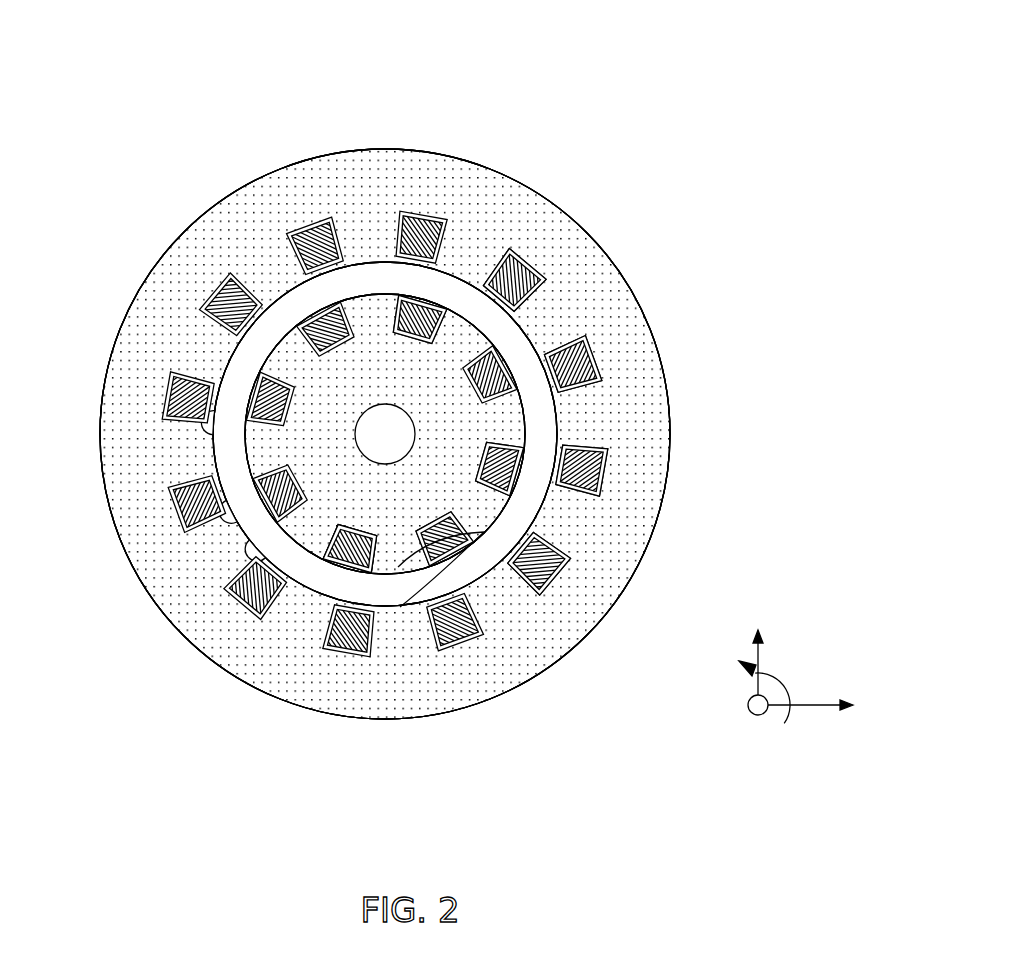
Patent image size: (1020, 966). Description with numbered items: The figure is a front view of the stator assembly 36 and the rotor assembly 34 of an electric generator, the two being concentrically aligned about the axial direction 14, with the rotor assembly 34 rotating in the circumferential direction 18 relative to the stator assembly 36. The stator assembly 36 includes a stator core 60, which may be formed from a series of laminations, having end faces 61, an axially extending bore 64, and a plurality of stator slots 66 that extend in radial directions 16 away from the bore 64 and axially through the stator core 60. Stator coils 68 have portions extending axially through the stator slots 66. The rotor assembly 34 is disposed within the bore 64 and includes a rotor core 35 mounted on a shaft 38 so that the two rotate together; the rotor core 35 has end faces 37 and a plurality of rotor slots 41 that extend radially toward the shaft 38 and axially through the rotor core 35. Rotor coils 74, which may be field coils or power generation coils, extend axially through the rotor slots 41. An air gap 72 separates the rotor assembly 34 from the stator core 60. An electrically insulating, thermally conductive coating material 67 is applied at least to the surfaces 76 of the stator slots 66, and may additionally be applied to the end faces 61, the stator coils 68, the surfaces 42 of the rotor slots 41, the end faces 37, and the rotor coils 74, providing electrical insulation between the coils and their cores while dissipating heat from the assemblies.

The axial direction 14 is at (758, 718).
The radial direction 16 is at (762, 632).
The circumferential direction 18 is at (783, 672).
The rotor assembly 34 is at (380, 308).
The rotor core 35 is at (377, 238).
The stator assembly 36 is at (152, 150).
The end faces 37 is at (327, 507).
The shaft 38 is at (385, 466).
The rotor slots 41 is at (483, 480).
The surfaces of the rotor slots 42 is at (415, 527).
The stator core 60 is at (484, 164).
The end faces 61 is at (563, 258).
The axially extending bore 64 is at (472, 425).
The stator slots 66 is at (458, 628).
The coating material 67 is at (345, 362).
The stator coils 68 is at (213, 443).
The air gap 72 is at (289, 308).
The rotor coils 74 is at (433, 305).
The surfaces of the slots 76 is at (545, 322).